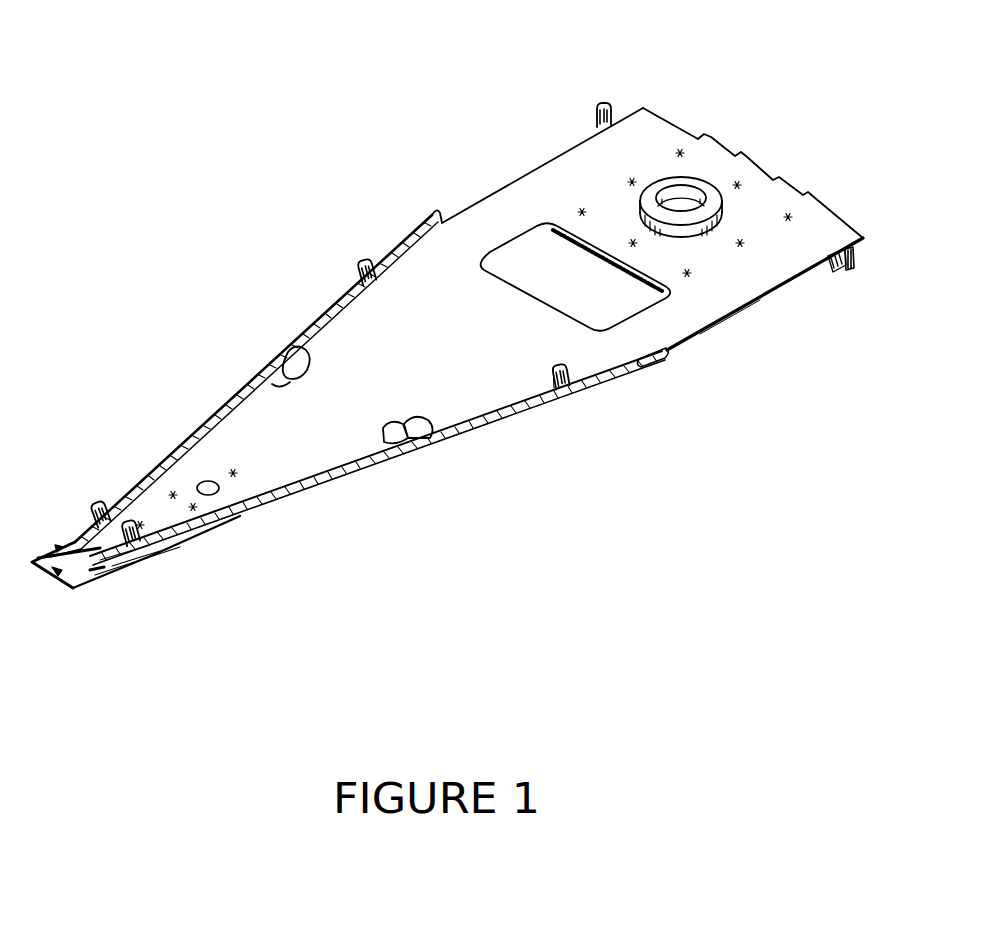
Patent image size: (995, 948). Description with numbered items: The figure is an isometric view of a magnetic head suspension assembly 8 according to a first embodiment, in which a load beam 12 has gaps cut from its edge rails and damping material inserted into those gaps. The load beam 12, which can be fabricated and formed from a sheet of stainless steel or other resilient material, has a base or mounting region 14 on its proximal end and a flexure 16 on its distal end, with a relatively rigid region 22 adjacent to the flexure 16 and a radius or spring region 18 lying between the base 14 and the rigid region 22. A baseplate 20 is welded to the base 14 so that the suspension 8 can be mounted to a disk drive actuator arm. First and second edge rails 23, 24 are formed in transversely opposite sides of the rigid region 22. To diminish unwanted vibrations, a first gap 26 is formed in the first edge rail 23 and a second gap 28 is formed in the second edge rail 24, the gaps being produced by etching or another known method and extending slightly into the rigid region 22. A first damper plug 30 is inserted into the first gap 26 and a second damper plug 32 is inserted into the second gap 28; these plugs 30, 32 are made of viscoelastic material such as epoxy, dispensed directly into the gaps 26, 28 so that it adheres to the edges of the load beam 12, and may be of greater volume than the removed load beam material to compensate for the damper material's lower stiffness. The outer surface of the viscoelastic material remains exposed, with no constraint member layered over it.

The magnetic head suspension assembly 8 is at (617, 564).
The load beam 12 is at (443, 128).
The base or mounting region 14 is at (668, 122).
The flexure 16 is at (92, 567).
The radius or spring region 18 is at (722, 318).
The baseplate 20 is at (707, 180).
The rigid region 22 is at (570, 393).
The first edge rail 23 is at (250, 388).
The second edge rail 24 is at (298, 490).
The first gap 26 is at (290, 350).
The second gap 28 is at (420, 440).
The first damper plug 30 is at (270, 382).
The second damper plug 32 is at (388, 442).